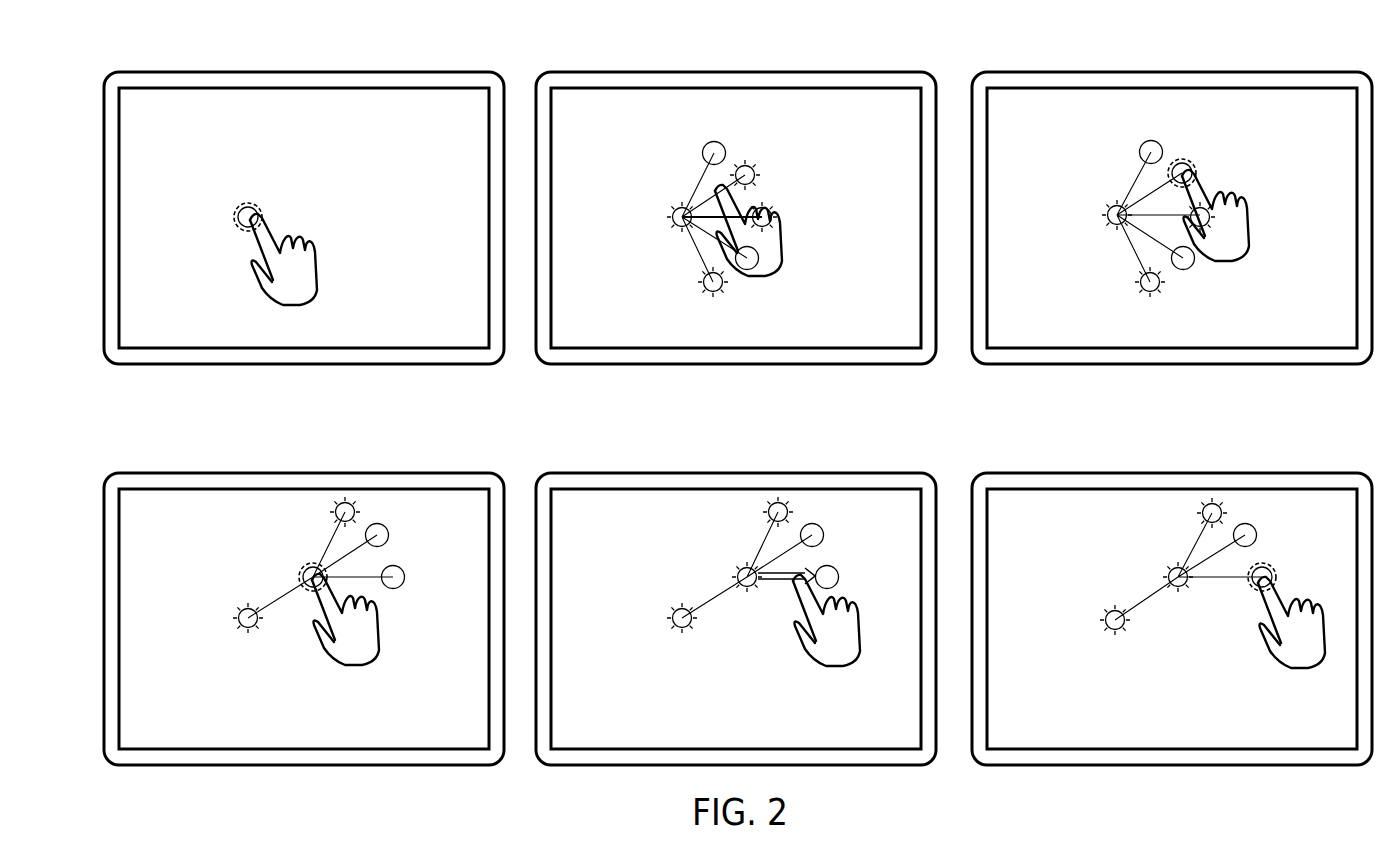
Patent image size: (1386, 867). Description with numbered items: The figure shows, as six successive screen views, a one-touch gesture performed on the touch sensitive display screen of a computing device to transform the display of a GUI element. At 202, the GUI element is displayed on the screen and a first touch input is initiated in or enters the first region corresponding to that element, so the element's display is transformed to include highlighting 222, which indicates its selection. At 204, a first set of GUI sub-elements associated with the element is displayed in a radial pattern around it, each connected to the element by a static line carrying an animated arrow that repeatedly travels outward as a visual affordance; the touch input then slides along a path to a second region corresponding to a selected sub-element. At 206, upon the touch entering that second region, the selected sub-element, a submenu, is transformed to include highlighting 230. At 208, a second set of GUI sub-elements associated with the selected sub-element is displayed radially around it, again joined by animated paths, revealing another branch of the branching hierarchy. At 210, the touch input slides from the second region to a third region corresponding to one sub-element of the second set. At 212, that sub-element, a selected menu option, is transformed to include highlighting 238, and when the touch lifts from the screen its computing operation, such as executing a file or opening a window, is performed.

The first stage of the gesture sequence 202 is at (410, 73).
The second stage of the gesture sequence 204 is at (843, 73).
The third stage of the gesture sequence 206 is at (1278, 73).
The fourth stage of the gesture sequence 208 is at (410, 474).
The fifth stage of the gesture sequence 210 is at (843, 474).
The sixth stage of the gesture sequence 212 is at (1278, 474).
The highlighting 222 is at (262, 210).
The highlighting 230 is at (1200, 171).
The highlighting 238 is at (1273, 565).